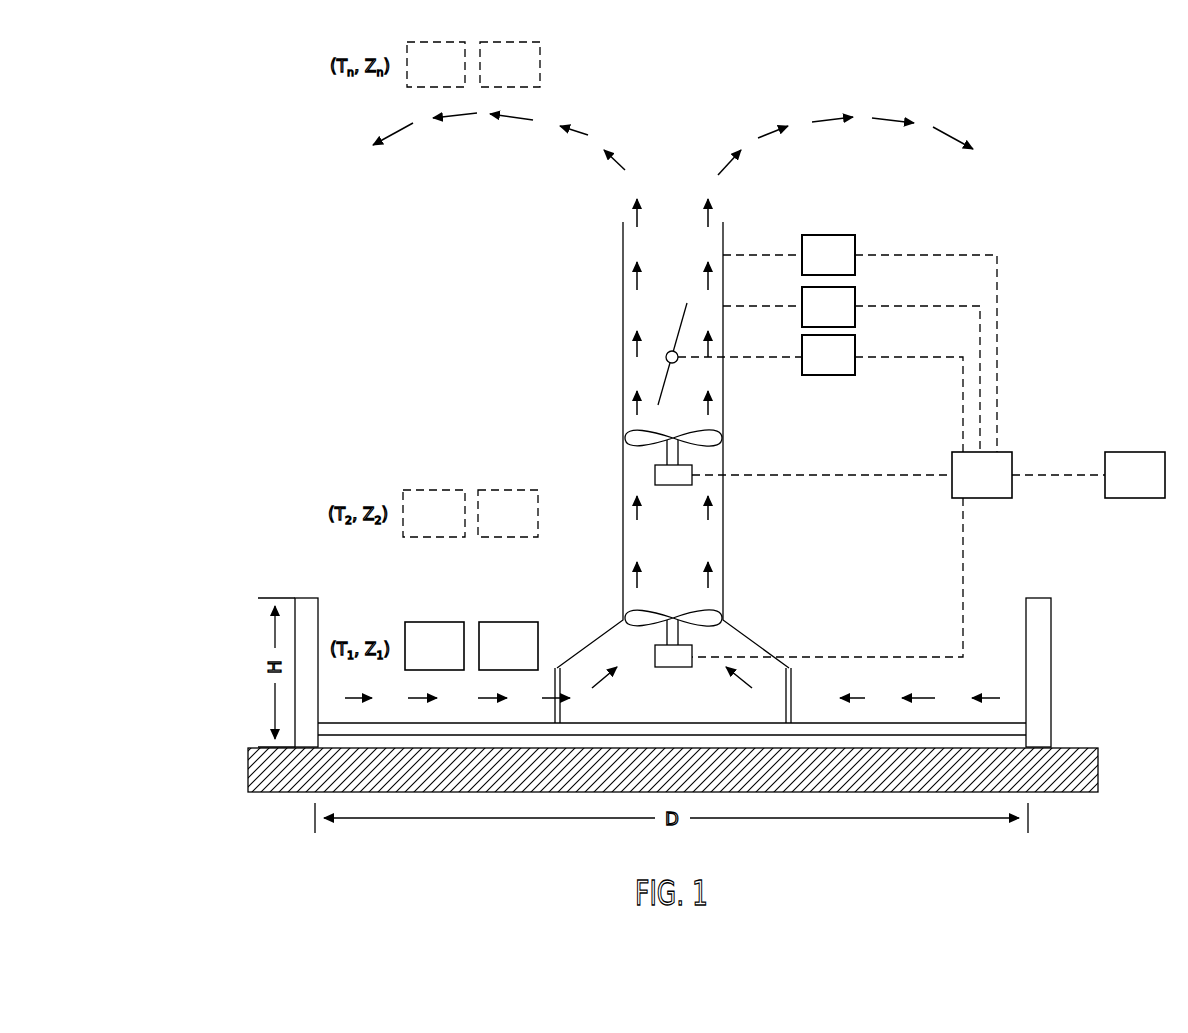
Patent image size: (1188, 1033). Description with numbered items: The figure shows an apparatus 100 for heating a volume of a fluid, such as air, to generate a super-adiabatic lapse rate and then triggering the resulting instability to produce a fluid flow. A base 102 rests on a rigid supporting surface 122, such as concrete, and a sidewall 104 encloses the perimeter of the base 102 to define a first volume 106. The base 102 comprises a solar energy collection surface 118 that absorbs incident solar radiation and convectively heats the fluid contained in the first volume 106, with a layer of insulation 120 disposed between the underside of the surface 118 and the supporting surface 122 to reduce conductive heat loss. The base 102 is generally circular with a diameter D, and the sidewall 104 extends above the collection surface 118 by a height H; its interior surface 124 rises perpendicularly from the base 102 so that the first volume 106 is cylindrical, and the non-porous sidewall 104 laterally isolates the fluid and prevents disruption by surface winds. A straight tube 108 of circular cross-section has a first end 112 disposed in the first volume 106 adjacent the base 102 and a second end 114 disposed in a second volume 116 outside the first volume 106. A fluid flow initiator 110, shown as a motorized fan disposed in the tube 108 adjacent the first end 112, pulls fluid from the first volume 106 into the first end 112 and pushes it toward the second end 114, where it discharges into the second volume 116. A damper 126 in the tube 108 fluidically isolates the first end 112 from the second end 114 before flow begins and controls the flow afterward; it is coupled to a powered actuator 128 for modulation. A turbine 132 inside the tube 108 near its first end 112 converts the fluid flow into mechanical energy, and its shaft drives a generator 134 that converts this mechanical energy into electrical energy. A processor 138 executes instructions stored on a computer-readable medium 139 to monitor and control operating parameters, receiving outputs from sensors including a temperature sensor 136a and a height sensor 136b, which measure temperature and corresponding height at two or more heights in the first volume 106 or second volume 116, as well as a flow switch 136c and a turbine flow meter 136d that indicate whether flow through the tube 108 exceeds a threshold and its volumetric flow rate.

The apparatus 100 is at (231, 236).
The base 102 is at (880, 690).
The sidewall 104 is at (1051, 623).
The first volume 106 is at (995, 638).
The tube 108 is at (622, 252).
The fluid flow initiator 110 is at (646, 653).
The first end 112 is at (609, 609).
The second end 114 is at (599, 210).
The second volume 116 is at (362, 353).
The solar energy collection surface 118 is at (948, 720).
The layer of insulation 120 is at (396, 740).
The supporting surface 122 is at (320, 767).
The interior surface 124 is at (318, 618).
The damper 126 is at (680, 320).
The powered actuator 128 is at (820, 393).
The turbine 132 is at (626, 438).
The generator 134 is at (655, 475).
The temperature sensor 136a is at (434, 356).
The height sensor 136b is at (509, 356).
The flow switch 136c is at (860, 343).
The turbine flow meter 136d is at (851, 369).
The processor 138 is at (852, 554).
The computer-readable medium 139 is at (1088, 475).